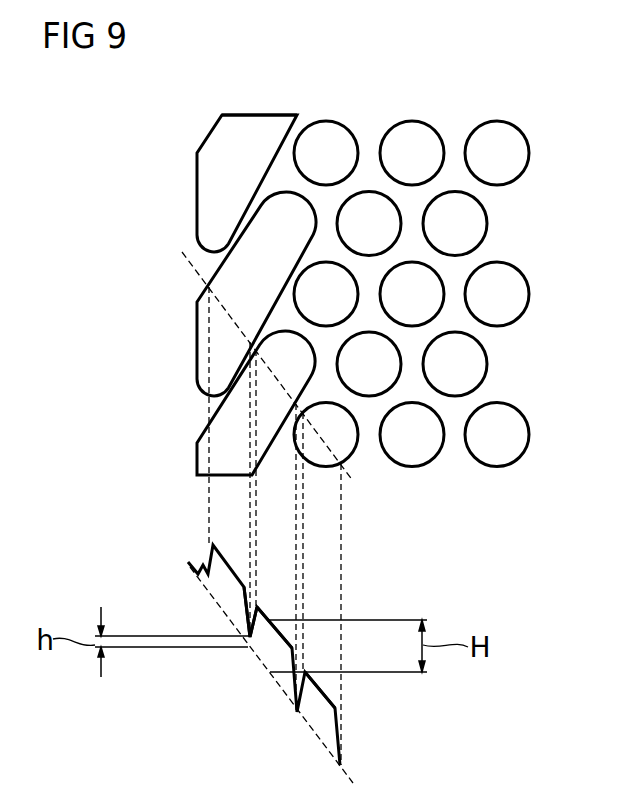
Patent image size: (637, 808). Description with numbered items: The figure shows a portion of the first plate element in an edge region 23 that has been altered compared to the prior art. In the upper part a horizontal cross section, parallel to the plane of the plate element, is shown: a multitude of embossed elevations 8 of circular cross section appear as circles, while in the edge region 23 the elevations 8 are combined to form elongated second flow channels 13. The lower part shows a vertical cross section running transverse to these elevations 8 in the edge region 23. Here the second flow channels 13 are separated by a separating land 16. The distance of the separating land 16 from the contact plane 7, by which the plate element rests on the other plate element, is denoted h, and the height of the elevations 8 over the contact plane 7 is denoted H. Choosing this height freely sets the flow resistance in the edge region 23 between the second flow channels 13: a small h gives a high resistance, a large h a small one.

The contact plane 7 is at (213, 598).
The elevations 8 is at (413, 467).
The second flow channels 13 is at (197, 190).
The separating land 16 is at (248, 648).
The edge region 23 is at (258, 111).